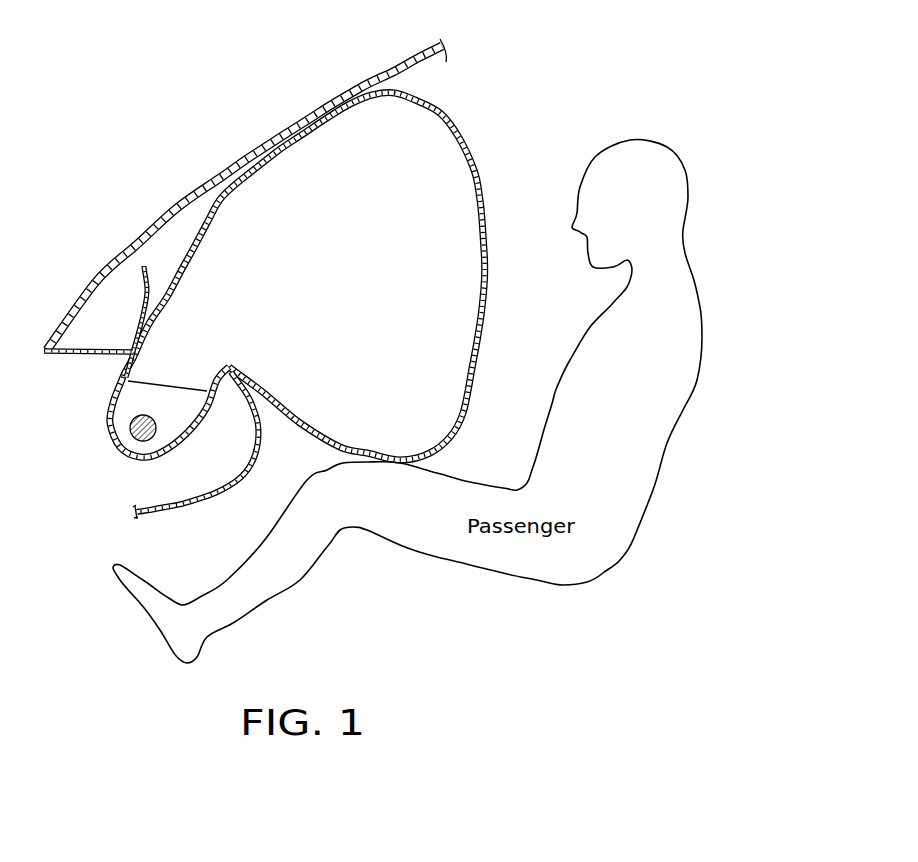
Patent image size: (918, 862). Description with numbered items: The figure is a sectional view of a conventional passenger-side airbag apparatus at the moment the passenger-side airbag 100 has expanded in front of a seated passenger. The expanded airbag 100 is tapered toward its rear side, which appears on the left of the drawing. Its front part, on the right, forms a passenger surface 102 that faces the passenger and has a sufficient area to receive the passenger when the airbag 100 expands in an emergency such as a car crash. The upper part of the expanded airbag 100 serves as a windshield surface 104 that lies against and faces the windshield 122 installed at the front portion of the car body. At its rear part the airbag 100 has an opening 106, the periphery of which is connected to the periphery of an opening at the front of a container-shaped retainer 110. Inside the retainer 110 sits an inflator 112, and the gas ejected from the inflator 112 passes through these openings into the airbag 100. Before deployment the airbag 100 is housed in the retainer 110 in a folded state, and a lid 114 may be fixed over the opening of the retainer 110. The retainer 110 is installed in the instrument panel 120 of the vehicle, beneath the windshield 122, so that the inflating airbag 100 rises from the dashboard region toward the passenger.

The passenger-side airbag 100 is at (403, 259).
The passenger surface 102 is at (486, 174).
The windshield surface 104 is at (214, 191).
The opening 106 is at (175, 380).
The retainer 110 is at (117, 388).
The inflator 112 is at (131, 430).
The lid 114 is at (139, 299).
The instrument panel 120 is at (162, 504).
The windshield 122 is at (386, 70).